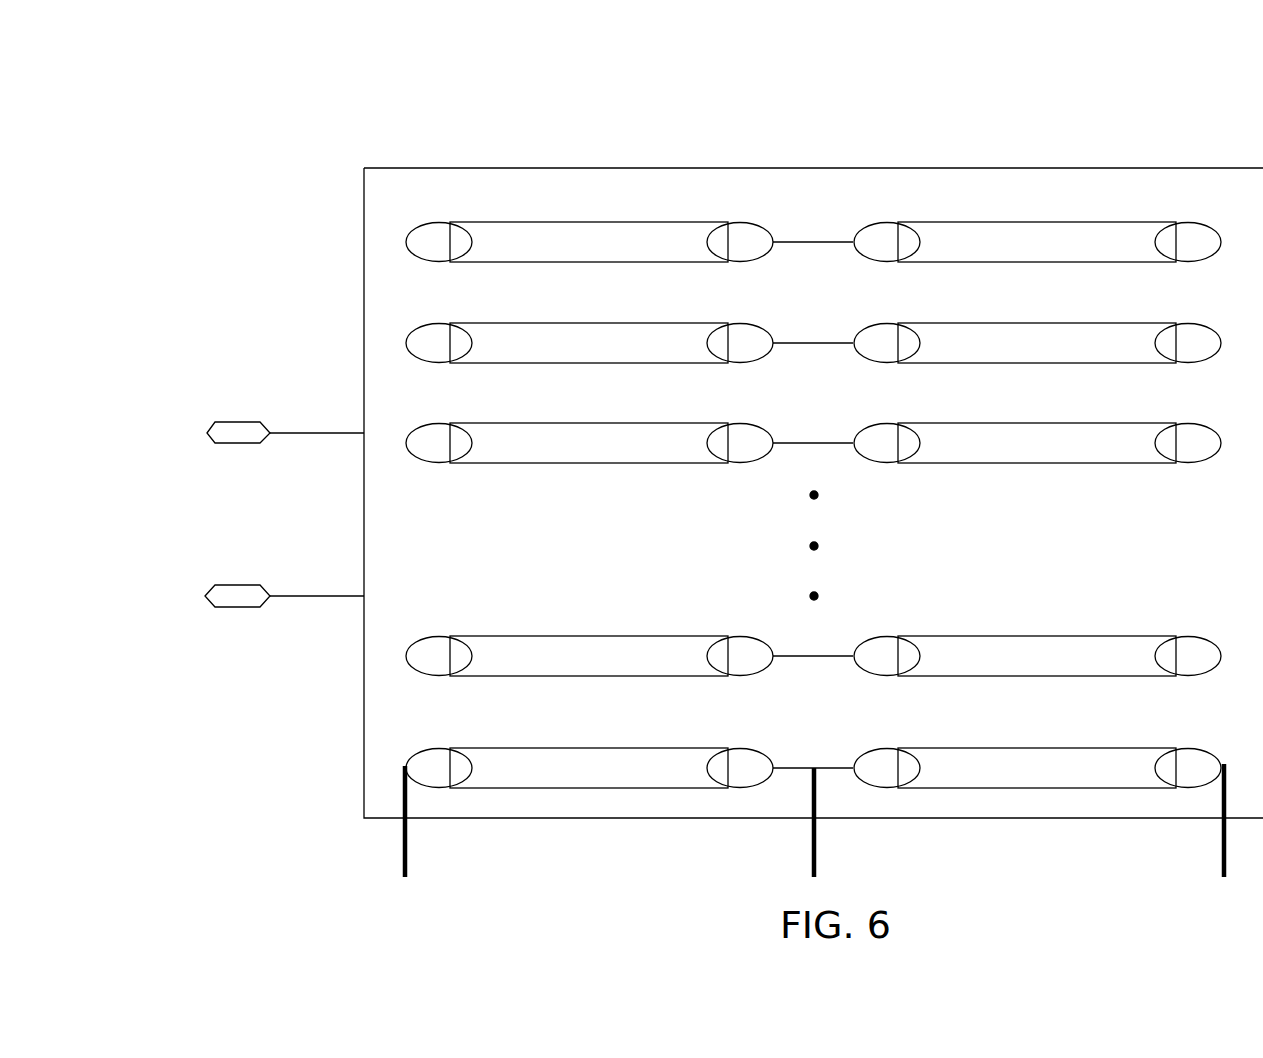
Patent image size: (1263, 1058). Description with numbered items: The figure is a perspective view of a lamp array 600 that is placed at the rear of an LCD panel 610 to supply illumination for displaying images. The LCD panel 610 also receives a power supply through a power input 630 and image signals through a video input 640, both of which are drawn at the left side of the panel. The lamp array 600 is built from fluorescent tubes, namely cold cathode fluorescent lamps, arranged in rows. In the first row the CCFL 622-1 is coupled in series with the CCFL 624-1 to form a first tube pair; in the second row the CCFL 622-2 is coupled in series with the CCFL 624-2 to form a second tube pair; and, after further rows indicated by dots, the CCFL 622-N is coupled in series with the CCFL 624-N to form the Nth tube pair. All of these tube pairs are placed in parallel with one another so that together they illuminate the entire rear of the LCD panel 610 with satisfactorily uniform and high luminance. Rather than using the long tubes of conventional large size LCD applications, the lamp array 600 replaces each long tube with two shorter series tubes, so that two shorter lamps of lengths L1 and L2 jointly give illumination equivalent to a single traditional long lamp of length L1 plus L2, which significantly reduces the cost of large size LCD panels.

The lamp array 600 is at (262, 142).
The LCD panel 610 is at (1153, 166).
The CCFL 622-1 is at (590, 219).
The CCFL 622-2 is at (590, 320).
The CCFL 622-N is at (590, 745).
The CCFL 624-1 is at (1038, 219).
The CCFL 624-2 is at (1038, 320).
The CCFL 624-N is at (1038, 745).
The power input 630 is at (235, 421).
The video input 640 is at (235, 584).